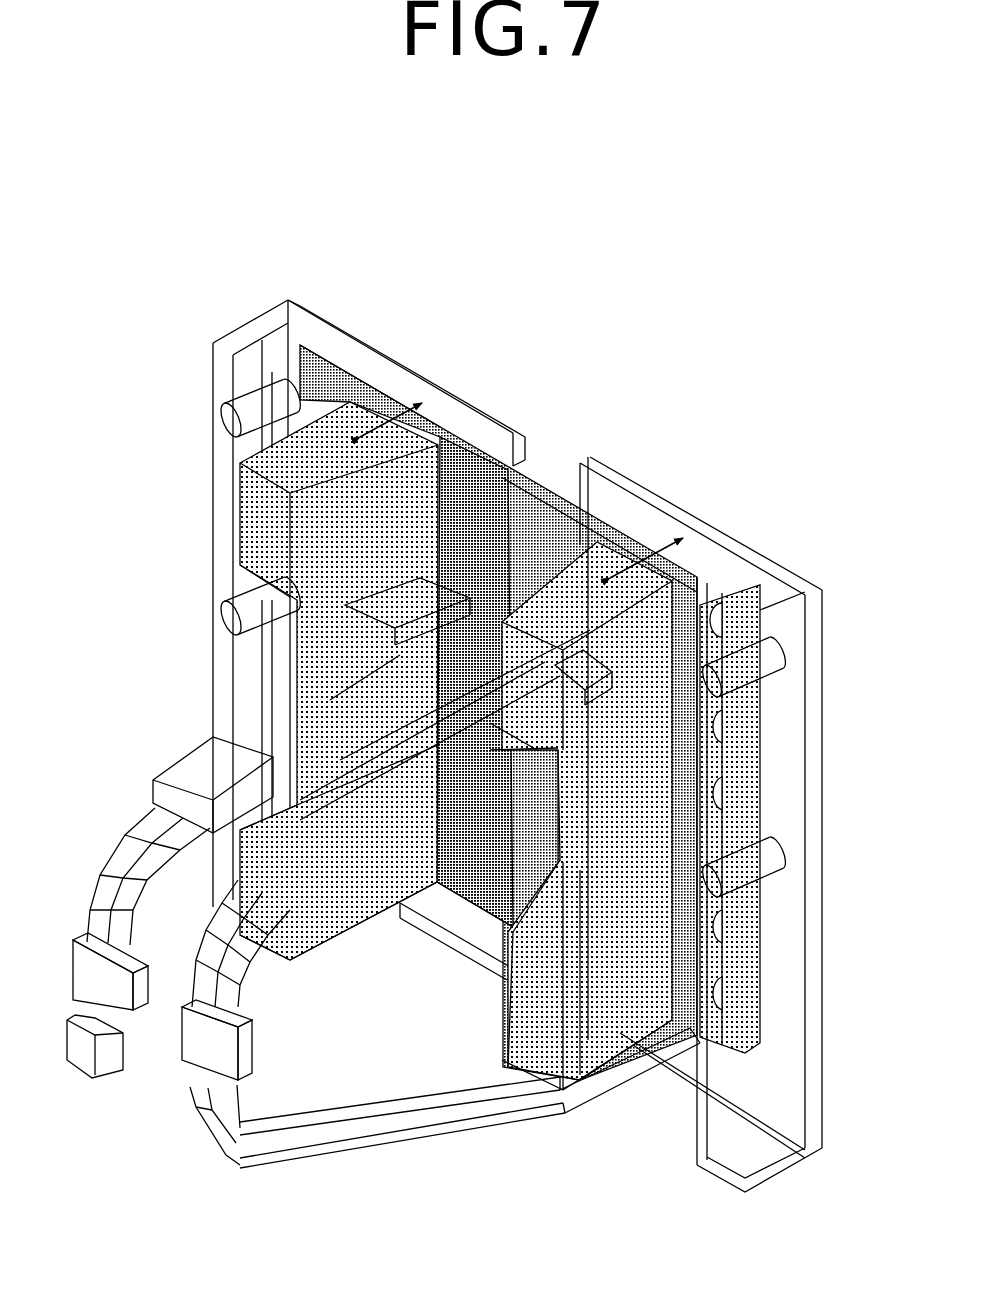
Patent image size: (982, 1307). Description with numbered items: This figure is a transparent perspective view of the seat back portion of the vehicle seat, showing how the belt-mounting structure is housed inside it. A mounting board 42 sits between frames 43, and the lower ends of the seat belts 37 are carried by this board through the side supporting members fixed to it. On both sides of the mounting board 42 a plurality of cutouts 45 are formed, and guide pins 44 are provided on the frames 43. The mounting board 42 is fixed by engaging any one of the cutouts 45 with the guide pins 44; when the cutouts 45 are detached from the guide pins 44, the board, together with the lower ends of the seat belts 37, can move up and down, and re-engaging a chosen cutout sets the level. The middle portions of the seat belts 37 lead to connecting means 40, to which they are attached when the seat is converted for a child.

The seat belt 37 is at (140, 823).
The connecting means 40 is at (77, 960).
The mounting board 42 is at (543, 472).
The frame 43 is at (615, 477).
The guide pin 44 is at (227, 420).
The cutout 45 is at (337, 393).